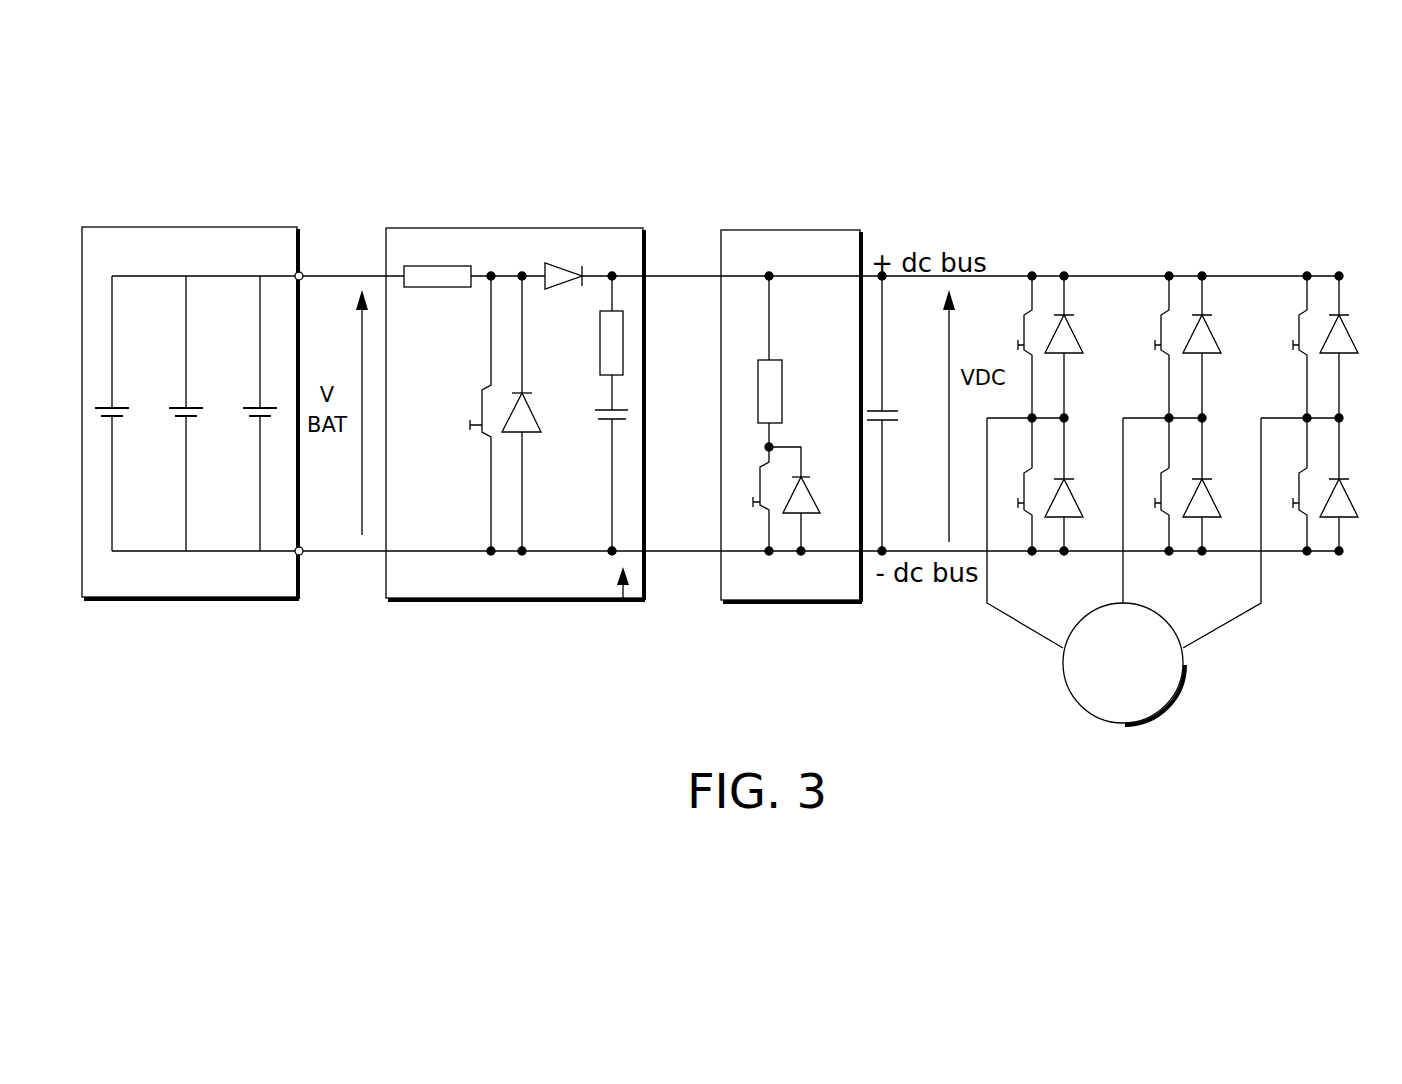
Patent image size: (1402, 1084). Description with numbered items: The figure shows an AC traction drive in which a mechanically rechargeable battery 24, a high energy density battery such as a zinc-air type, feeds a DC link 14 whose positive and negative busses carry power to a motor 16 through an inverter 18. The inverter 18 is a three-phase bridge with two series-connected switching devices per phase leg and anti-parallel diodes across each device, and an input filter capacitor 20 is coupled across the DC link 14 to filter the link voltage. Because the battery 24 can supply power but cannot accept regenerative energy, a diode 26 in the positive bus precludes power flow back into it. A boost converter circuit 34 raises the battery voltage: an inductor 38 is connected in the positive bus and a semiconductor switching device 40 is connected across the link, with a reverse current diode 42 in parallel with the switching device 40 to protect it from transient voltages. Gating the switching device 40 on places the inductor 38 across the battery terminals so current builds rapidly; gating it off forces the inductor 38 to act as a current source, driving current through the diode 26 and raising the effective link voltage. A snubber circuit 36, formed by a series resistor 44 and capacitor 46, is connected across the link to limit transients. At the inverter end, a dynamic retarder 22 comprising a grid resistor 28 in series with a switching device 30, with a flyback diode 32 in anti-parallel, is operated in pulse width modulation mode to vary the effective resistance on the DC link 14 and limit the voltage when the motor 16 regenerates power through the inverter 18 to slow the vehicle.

The DC link 14 is at (358, 205).
The motor 16 is at (1183, 677).
The inverter 18 is at (1352, 238).
The input filter capacitor 20 is at (893, 420).
The dynamic retarder 22 is at (832, 230).
The mechanically rechargeable battery 24 is at (242, 227).
The diode 26 is at (575, 266).
The grid resistor 28 is at (758, 383).
The switching device 30 is at (760, 475).
The flyback diode 32 is at (860, 507).
The boost converter circuit 34 is at (507, 228).
The snubber circuit 36 is at (622, 600).
The inductor 38 is at (412, 266).
The semiconductor switching device 40 is at (482, 437).
The reverse current diode 42 is at (532, 432).
The resistor 44 is at (645, 332).
The capacitor 46 is at (643, 455).